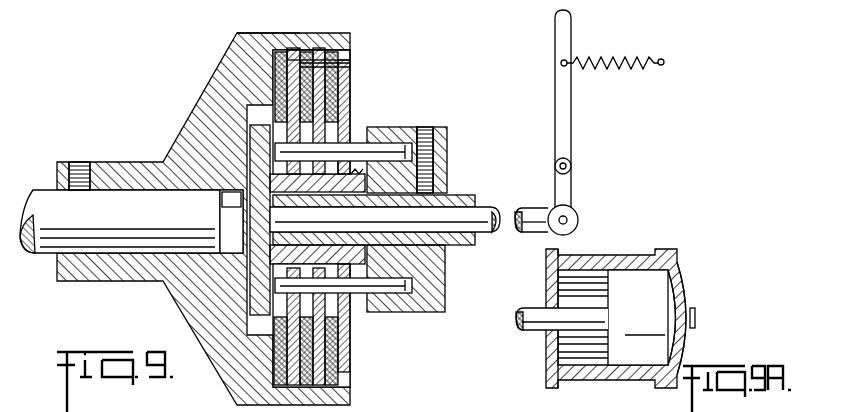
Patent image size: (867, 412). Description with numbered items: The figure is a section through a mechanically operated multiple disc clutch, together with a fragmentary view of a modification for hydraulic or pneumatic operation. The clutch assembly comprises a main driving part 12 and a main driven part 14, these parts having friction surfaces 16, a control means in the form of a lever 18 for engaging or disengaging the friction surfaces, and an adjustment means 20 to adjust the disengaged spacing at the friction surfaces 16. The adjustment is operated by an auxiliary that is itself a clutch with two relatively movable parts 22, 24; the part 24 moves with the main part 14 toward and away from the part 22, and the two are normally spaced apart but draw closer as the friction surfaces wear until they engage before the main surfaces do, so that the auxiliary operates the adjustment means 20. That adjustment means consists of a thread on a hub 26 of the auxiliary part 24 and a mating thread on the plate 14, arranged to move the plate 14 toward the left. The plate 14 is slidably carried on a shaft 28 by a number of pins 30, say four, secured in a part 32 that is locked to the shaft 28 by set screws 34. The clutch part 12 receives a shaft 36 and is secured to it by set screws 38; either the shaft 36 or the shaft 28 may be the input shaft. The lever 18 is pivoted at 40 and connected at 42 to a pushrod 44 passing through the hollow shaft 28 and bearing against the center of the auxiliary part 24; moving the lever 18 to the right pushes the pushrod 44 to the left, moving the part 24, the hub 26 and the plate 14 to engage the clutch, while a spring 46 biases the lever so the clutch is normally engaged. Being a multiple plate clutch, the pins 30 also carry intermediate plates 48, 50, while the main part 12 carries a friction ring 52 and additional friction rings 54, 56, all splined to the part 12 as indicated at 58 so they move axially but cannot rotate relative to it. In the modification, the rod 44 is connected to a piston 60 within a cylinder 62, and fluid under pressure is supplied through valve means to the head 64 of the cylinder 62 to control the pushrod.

In FIG. 9, the main driving part 12 is at (256, 125).
In FIG. 9, the main driven part 14 is at (341, 88).
In FIG. 9, the friction surfaces 16 is at (342, 66).
In FIG. 9, the lever 18 is at (572, 36).
In FIG. 9, the adjustment means 20 is at (335, 176).
In FIG. 9, the auxiliary clutch part 22 is at (240, 158).
In FIG. 9, the auxiliary clutch part 24 is at (213, 80).
In FIG. 9, the hub 26 is at (355, 255).
In FIG. 9, the shaft 28 is at (455, 195).
In FIG. 9, the pins 30 is at (392, 150).
In FIG. 9, the part 32 is at (440, 304).
In FIG. 9, the set screws 34 is at (437, 128).
In FIG. 9, the shaft 36 is at (33, 190).
In FIG. 9, the set screws 38 is at (76, 162).
In FIG. 9, the pivot 40 is at (572, 166).
In FIG. 9, the connection 42 is at (576, 219).
In FIG. 9, the pushrod 44 is at (488, 207).
In FIG. 9A, the pushrod 44 is at (530, 331).
In FIG. 9, the spring 46 is at (615, 68).
In FIG. 9, the intermediate plate 48 is at (318, 50).
In FIG. 9, the intermediate plate 50 is at (283, 50).
In FIG. 9, the friction ring 52 is at (331, 50).
In FIG. 9, the friction ring 54 is at (296, 48).
In FIG. 9, the friction ring 56 is at (270, 33).
In FIG. 9, the spline 58 is at (346, 52).
In FIG. 9A, the piston 60 is at (625, 358).
In FIG. 9A, the cylinder 62 is at (598, 262).
In FIG. 9A, the head 64 is at (686, 290).